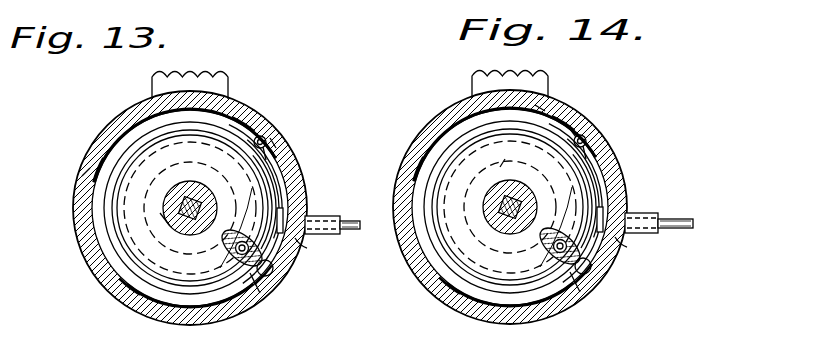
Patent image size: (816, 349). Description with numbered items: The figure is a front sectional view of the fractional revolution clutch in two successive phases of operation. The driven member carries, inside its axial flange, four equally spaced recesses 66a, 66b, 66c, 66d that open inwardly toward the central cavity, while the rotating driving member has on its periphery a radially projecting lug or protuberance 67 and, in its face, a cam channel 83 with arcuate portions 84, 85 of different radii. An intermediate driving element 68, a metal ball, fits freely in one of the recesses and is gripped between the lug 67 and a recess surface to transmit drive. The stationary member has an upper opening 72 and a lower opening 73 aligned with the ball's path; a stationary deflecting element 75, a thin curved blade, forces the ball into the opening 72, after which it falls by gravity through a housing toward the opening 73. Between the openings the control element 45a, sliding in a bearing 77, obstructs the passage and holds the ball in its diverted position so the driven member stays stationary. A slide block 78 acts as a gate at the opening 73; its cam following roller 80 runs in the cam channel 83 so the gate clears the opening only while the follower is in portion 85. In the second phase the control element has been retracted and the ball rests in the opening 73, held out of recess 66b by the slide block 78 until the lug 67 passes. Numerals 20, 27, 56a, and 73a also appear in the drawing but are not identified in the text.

In FIG. 13, the pinion gear 20 is at (206, 73).
In FIG. 14, the casing 27 is at (566, 96).
In FIG. 13, the control element 45a is at (338, 234).
In FIG. 14, the control element 45a is at (663, 231).
In FIG. 13, the spring end 56a is at (300, 143).
In FIG. 14, the spring end 56a is at (596, 117).
In FIG. 13, the recess 66a is at (257, 109).
In FIG. 14, the recess 66a is at (567, 95).
In FIG. 13, the recess 66b is at (292, 281).
In FIG. 14, the recess 66b is at (615, 266).
In FIG. 13, the recess 66c is at (113, 301).
In FIG. 14, the recess 66c is at (432, 306).
In FIG. 13, the recess 66d is at (79, 153).
In FIG. 14, the recess 66d is at (403, 145).
In FIG. 13, the lug or protuberance 67 is at (288, 189).
In FIG. 14, the lug or protuberance 67 is at (615, 188).
In FIG. 13, the intermediate driving element 68 is at (310, 212).
In FIG. 14, the intermediate driving element 68 is at (617, 253).
In FIG. 13, the opening 72 is at (282, 133).
In FIG. 14, the opening 72 is at (610, 144).
In FIG. 13, the opening 73 is at (276, 290).
In FIG. 14, the opening 73 is at (583, 266).
In FIG. 13, the lever 73a is at (96, 236).
In FIG. 13, the stationary deflecting element 75 is at (298, 202).
In FIG. 14, the stationary deflecting element 75 is at (618, 218).
In FIG. 13, the bearing 77 is at (316, 254).
In FIG. 14, the bearing 77 is at (643, 220).
In FIG. 13, the slide block 78 is at (243, 308).
In FIG. 14, the slide block 78 is at (590, 296).
In FIG. 13, the cam following roller 80 is at (222, 250).
In FIG. 14, the cam following roller 80 is at (538, 248).
In FIG. 14, the cam channel 83 is at (551, 291).
In FIG. 13, the arcuate portion 84 is at (202, 208).
In FIG. 14, the arcuate portion 84 is at (521, 207).
In FIG. 13, the arcuate portion 85 is at (63, 166).
In FIG. 14, the arcuate portion 85 is at (500, 155).